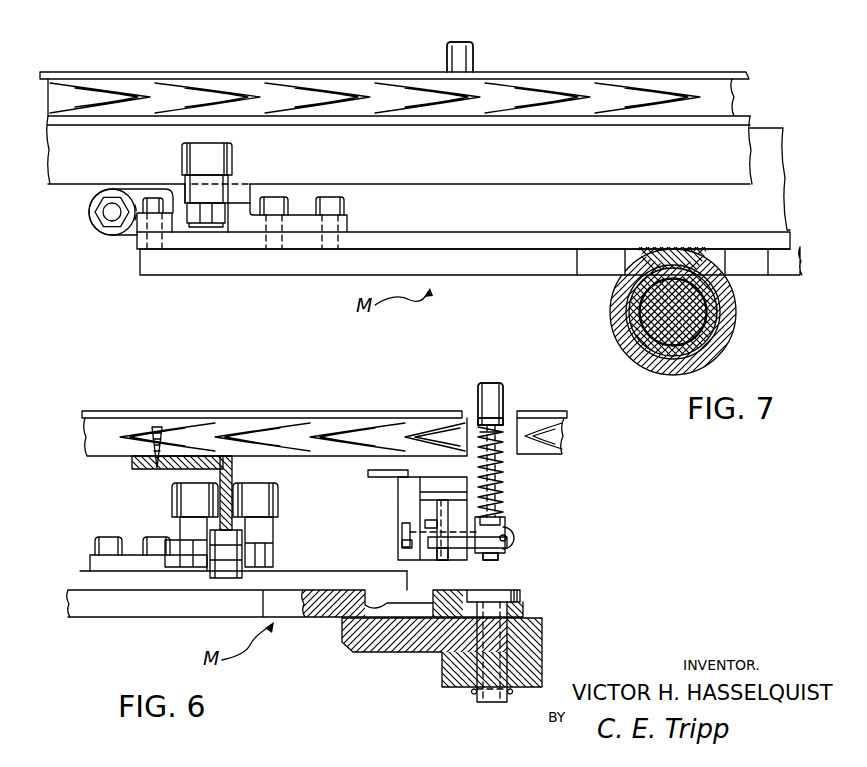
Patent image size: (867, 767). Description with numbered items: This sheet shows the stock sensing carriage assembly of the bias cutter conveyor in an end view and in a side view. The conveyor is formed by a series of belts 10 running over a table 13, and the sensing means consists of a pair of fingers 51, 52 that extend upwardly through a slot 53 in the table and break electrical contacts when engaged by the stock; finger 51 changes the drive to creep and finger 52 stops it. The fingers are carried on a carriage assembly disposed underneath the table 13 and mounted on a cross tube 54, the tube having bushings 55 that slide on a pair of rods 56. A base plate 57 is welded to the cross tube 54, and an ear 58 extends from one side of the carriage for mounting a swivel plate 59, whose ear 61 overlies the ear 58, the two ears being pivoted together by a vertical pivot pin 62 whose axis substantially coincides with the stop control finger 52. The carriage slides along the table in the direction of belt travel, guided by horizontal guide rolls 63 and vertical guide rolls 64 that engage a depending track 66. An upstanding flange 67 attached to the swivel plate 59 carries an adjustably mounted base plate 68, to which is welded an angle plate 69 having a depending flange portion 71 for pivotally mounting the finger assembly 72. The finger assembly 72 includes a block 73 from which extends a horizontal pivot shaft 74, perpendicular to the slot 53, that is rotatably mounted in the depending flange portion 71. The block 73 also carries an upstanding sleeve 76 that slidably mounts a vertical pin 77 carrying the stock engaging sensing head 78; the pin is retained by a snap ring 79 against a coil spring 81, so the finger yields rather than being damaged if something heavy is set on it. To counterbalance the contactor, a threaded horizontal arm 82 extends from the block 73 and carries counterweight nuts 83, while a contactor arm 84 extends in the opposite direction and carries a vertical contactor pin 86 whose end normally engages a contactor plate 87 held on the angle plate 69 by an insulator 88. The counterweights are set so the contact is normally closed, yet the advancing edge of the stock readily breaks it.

In FIG. 7, the belts 10 is at (197, 74).
In FIG. 6, the belts 10 is at (158, 383).
In FIG. 7, the table 13 is at (163, 88).
In FIG. 6, the table 13 is at (212, 423).
In FIG. 7, the finger 51 is at (482, 40).
In FIG. 6, the finger 52 is at (472, 376).
In FIG. 6, the slot 53 is at (518, 417).
In FIG. 7, the cross tube 54 is at (712, 355).
In FIG. 7, the bushings 55 is at (633, 320).
In FIG. 7, the rods 56 is at (700, 315).
In FIG. 7, the base plate 57 is at (400, 272).
In FIG. 6, the base plate 57 is at (148, 607).
In FIG. 6, the ear 58 is at (532, 635).
In FIG. 7, the swivel plate 59 is at (570, 232).
In FIG. 6, the swivel plate 59 is at (168, 583).
In FIG. 6, the ear 61 is at (525, 600).
In FIG. 6, the vertical pivot pin 62 is at (490, 697).
In FIG. 7, the horizontal guide rolls 63 is at (195, 152).
In FIG. 6, the horizontal guide rolls 63 is at (200, 498).
In FIG. 7, the vertical guide rolls 64 is at (97, 232).
In FIG. 6, the vertical guide rolls 64 is at (225, 565).
In FIG. 7, the depending track 66 is at (82, 180).
In FIG. 6, the depending track 66 is at (234, 467).
In FIG. 7, the upstanding flange 67 is at (770, 213).
In FIG. 6, the upstanding flange 67 is at (368, 473).
In FIG. 6, the base plate 68 is at (398, 481).
In FIG. 6, the angle plate 69 is at (440, 503).
In FIG. 6, the depending flange portion 71 is at (445, 560).
In FIG. 6, the finger assembly 72 is at (522, 548).
In FIG. 6, the block 73 is at (507, 520).
In FIG. 6, the horizontal pivot shaft 74 is at (420, 547).
In FIG. 6, the upstanding sleeve 76 is at (505, 482).
In FIG. 6, the vertical pin 77 is at (503, 445).
In FIG. 7, the sensing head 78 is at (452, 55).
In FIG. 6, the sensing head 78 is at (492, 392).
In FIG. 6, the snap ring 79 is at (500, 556).
In FIG. 6, the coil spring 81 is at (478, 425).
In FIG. 6, the threaded horizontal arm 82 is at (500, 530).
In FIG. 6, the counterweight nuts 83 is at (512, 538).
In FIG. 6, the contactor arm 84 is at (455, 548).
In FIG. 6, the contactor pin 86 is at (410, 532).
In FIG. 6, the contactor plate 87 is at (440, 522).
In FIG. 6, the insulator 88 is at (420, 500).